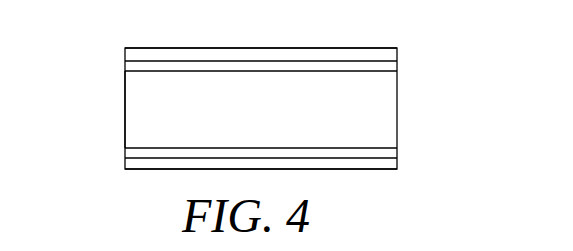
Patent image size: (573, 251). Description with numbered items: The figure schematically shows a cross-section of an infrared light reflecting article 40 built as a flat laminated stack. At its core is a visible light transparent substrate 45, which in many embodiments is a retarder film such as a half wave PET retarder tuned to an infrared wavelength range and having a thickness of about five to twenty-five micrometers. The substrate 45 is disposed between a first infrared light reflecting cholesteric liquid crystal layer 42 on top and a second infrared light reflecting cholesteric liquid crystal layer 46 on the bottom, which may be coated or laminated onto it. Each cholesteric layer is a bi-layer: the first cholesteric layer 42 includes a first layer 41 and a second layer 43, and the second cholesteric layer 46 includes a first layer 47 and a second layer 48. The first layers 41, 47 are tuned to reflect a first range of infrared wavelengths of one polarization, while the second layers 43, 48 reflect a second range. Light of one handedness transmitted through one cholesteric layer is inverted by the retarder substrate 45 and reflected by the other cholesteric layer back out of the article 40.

The infrared light reflecting article 40 is at (418, 37).
The first layer 41 is at (135, 65).
The first infrared light reflecting cholesteric liquid crystal layer 42 is at (116, 53).
The second layer 43 is at (148, 55).
The visible light transparent substrate 45 is at (380, 108).
The second infrared light reflecting cholesteric liquid crystal layer 46 is at (117, 162).
The first layer 47 is at (136, 151).
The second layer 48 is at (148, 163).